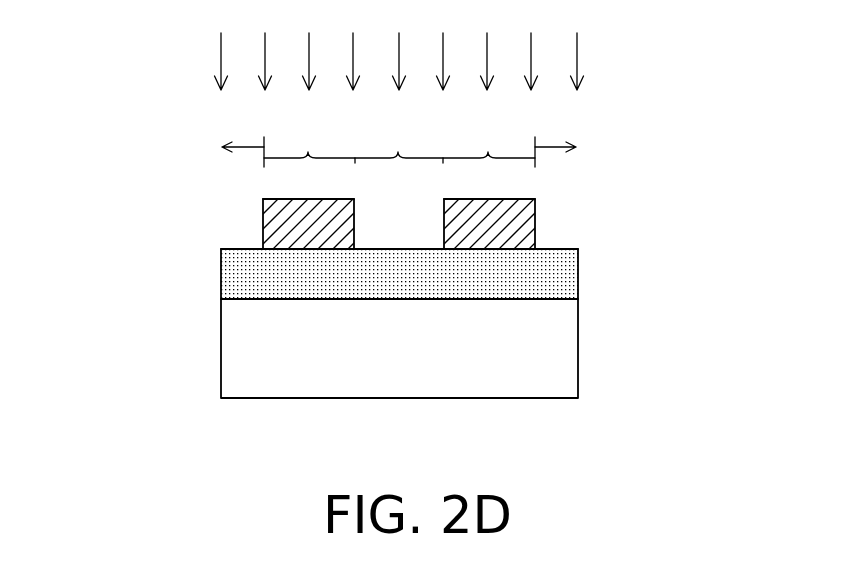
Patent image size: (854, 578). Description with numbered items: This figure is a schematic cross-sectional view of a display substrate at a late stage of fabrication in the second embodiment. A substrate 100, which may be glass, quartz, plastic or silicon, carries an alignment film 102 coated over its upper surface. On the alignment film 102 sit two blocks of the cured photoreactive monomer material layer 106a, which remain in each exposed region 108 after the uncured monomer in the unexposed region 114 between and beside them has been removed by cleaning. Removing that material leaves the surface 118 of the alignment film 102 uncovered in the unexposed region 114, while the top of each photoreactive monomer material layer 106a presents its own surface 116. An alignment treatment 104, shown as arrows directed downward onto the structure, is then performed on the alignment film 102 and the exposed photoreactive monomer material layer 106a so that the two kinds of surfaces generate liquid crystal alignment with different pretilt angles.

The substrate 100 is at (547, 377).
The alignment film 102 is at (527, 269).
The alignment treatment 104 is at (577, 52).
The photoreactive monomer material layer 106a is at (290, 225).
The exposed region 108 is at (399, 139).
The unexposed region 114 is at (400, 141).
The top surface of patterned layer 116 is at (278, 199).
The surface of the alignment thin film 118 is at (237, 250).